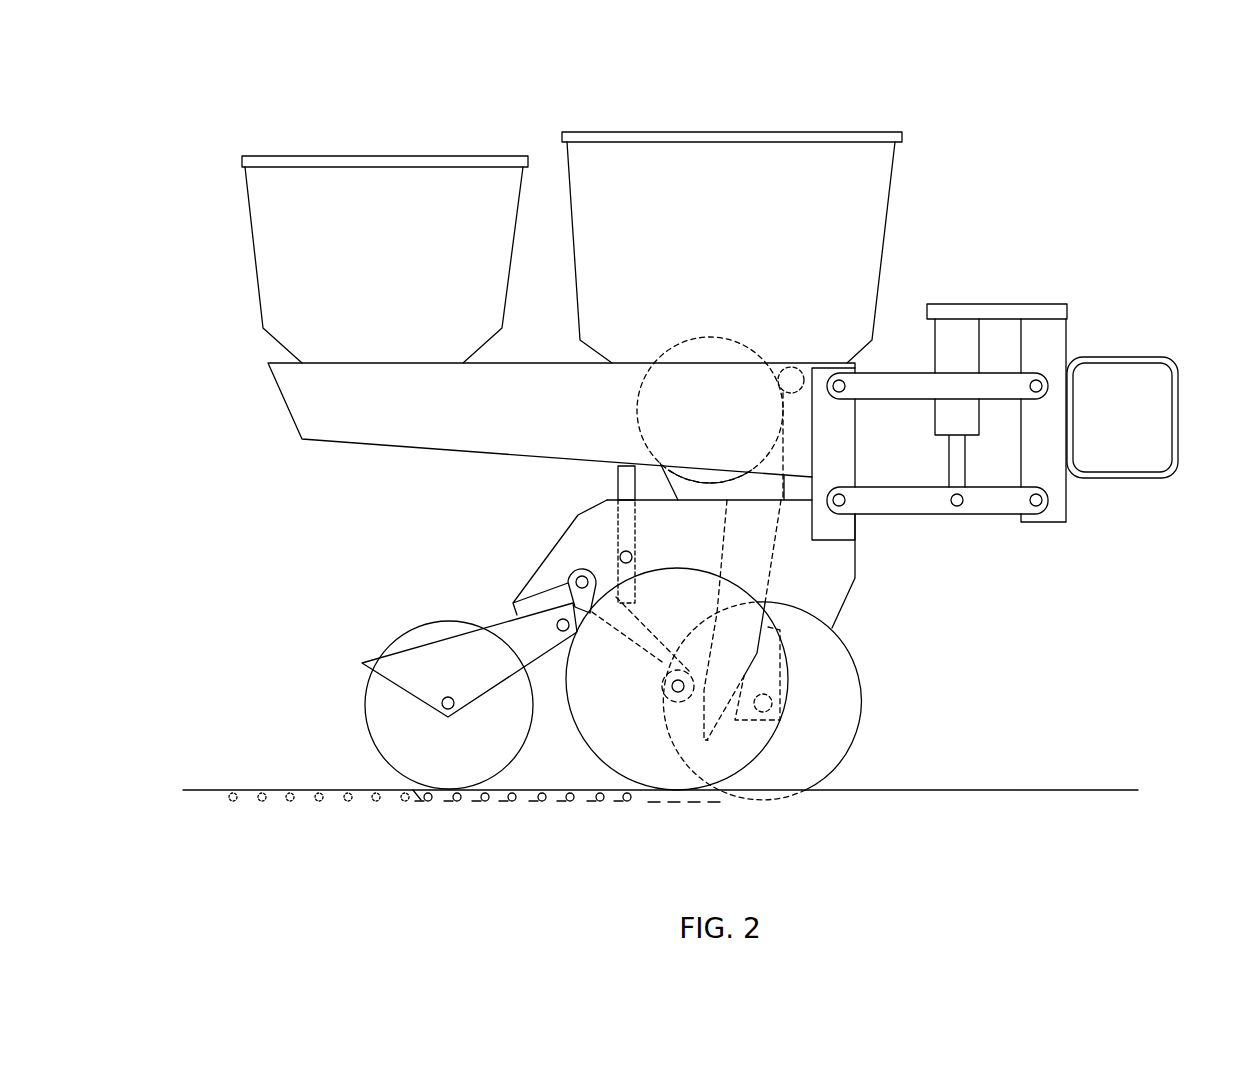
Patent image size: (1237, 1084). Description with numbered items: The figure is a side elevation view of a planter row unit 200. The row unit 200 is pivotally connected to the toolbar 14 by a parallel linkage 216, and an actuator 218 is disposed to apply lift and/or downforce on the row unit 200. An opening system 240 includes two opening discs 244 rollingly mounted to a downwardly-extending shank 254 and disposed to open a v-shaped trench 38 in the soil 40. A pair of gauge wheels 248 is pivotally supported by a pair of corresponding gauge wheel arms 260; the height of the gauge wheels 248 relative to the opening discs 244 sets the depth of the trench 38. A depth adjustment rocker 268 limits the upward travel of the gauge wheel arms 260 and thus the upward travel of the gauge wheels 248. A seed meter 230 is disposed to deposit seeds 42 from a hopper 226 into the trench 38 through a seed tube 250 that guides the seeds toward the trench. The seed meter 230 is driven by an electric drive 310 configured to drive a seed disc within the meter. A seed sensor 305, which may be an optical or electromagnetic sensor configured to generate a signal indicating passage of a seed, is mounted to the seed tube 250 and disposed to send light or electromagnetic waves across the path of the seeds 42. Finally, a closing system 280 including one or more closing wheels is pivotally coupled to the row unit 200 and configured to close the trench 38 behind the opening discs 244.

The row unit 200 is at (962, 210).
The toolbar 14 is at (1178, 425).
The hopper 226 is at (720, 252).
The electric drive 310 is at (804, 356).
The actuator 218 is at (940, 355).
The seed meter 230 is at (627, 437).
The parallel linkage 216 is at (999, 522).
The depth adjustment rocker 268 is at (613, 542).
The seed tube 250 is at (733, 559).
The gauge wheel arms 260 is at (512, 603).
The closing system 280 is at (340, 652).
The shank 254 is at (850, 595).
The gauge wheels 248 is at (593, 717).
The seed sensor 305 is at (787, 643).
The opening discs 244 is at (790, 769).
The opening system 240 is at (939, 666).
The soil 40 is at (1042, 790).
The seeds 42 is at (590, 803).
The trench 38 is at (672, 803).